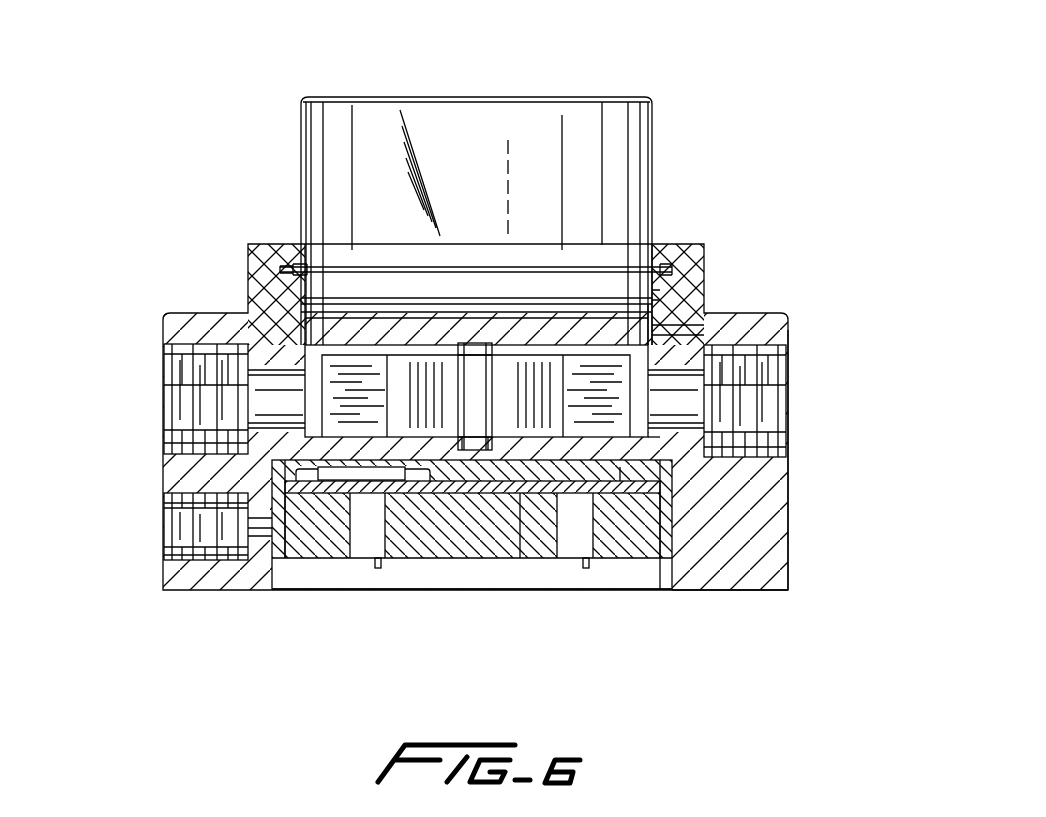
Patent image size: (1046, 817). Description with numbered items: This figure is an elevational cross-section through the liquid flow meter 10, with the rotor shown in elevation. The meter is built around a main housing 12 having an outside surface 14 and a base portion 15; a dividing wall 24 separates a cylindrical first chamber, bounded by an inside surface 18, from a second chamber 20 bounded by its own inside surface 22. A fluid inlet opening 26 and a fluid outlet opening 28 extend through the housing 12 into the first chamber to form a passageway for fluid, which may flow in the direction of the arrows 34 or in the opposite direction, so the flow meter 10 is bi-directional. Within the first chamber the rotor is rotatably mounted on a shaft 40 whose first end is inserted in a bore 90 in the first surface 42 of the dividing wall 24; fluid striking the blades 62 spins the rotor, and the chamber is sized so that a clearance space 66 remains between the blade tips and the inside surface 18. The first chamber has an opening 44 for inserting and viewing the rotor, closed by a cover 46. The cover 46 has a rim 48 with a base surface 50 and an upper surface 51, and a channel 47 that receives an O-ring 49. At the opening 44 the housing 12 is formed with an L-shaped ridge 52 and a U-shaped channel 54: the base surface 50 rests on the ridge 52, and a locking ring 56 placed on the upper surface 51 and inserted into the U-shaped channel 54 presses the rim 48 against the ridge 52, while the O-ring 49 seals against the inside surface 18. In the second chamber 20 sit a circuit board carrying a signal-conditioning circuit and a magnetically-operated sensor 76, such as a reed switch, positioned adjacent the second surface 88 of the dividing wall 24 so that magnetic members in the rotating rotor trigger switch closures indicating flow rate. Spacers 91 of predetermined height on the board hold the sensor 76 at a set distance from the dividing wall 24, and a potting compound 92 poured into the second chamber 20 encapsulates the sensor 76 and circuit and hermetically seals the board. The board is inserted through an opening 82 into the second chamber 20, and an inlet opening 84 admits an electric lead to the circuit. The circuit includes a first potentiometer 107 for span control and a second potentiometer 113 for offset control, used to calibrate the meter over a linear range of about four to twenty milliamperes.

The liquid flow meter 10 is at (816, 135).
The main housing 12 is at (746, 542).
The outside surface 14 is at (790, 540).
The base portion 15 is at (738, 590).
The inside surface 18 is at (645, 398).
The second chamber 20 is at (655, 570).
The inside surface 22 is at (670, 578).
The dividing wall 24 is at (660, 447).
The fluid inlet opening 26 is at (763, 427).
The fluid outlet opening 28 is at (197, 378).
The arrows 34 is at (70, 397).
The shaft 40 is at (498, 458).
The first surface 42 is at (335, 458).
The opening 44 is at (699, 149).
The cover 46 is at (520, 130).
The channel 47 is at (658, 295).
The rim 48 is at (633, 288).
The O-ring 49 is at (653, 313).
The base surface 50 is at (663, 342).
The upper surface 51 is at (618, 278).
The L-shaped ridge 52 is at (318, 325).
The U-shaped channel 54 is at (330, 343).
The locking ring 56 is at (298, 267).
The blades 62 is at (332, 398).
The clearance space 66 is at (306, 372).
The magnetically-operated sensor 76 is at (347, 480).
The opening 82 is at (270, 617).
The inlet opening 84 is at (187, 533).
The second surface 88 is at (290, 488).
The bore 90 is at (483, 460).
The spacers 91 is at (628, 473).
The potting compound 92 is at (533, 540).
The first potentiometer 107 is at (357, 553).
The second potentiometer 113 is at (572, 545).